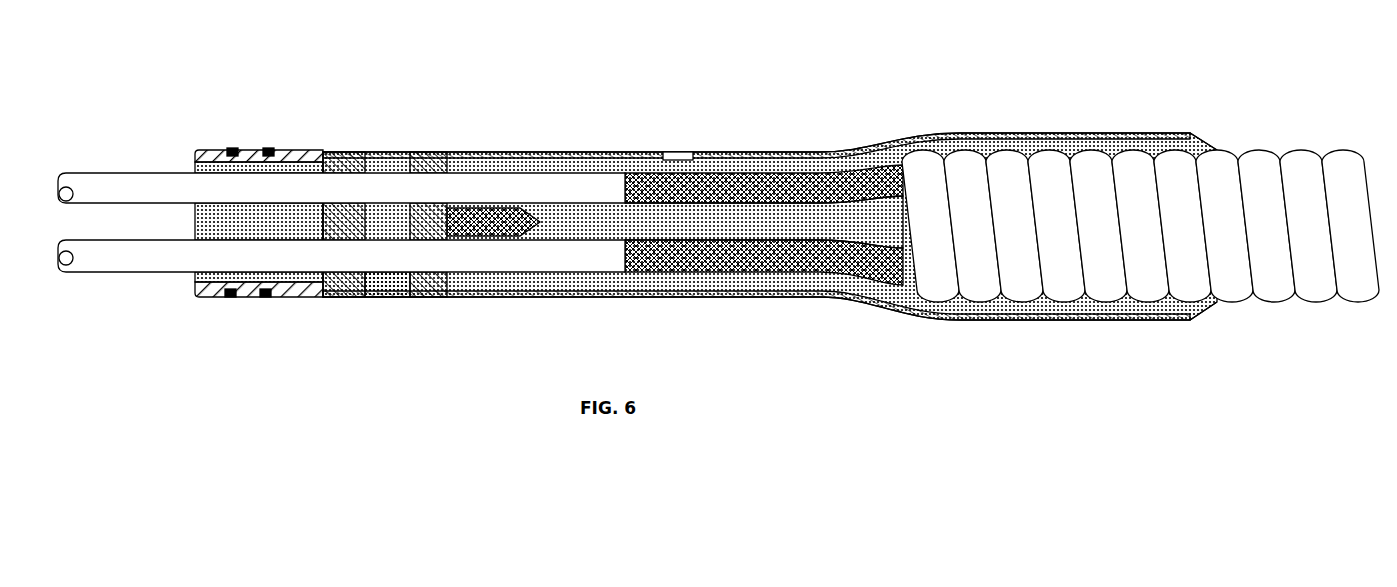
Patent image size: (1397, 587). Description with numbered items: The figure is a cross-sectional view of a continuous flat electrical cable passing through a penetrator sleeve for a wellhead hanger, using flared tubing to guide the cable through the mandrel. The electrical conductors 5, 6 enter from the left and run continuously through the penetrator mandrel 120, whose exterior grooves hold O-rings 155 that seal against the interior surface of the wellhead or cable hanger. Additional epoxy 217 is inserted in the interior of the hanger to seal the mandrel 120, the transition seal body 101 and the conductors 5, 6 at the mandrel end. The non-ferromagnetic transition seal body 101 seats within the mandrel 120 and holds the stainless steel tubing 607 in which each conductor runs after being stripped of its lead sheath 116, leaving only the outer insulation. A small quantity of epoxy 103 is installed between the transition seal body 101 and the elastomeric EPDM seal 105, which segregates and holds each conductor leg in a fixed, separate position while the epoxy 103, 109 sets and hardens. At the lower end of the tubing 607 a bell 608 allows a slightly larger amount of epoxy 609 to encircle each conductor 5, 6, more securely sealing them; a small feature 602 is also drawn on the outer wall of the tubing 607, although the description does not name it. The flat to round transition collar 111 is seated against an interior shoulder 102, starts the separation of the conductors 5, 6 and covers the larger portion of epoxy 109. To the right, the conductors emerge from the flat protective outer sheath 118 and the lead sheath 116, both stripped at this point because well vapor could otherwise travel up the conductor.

The electrical conductor 5 is at (122, 173).
The electrical conductor 6 is at (128, 272).
The O-rings 155 is at (270, 150).
The penetrator mandrel 120 is at (350, 153).
The transition seal body 101 is at (418, 157).
The elastomeric seal 105 is at (405, 207).
The epoxy 103 is at (513, 157).
The stainless steel tubing 607 is at (590, 155).
The bell 608 is at (593, 153).
The opening 602 is at (697, 157).
The lead sheath 116 is at (817, 182).
The epoxy 609 is at (870, 223).
The flat to round transition collar 111 is at (1130, 132).
The protective outer sheath 118 is at (1212, 173).
The additional epoxy 217 is at (240, 223).
The interior shoulder 102 is at (320, 293).
The epoxy 109 is at (413, 293).